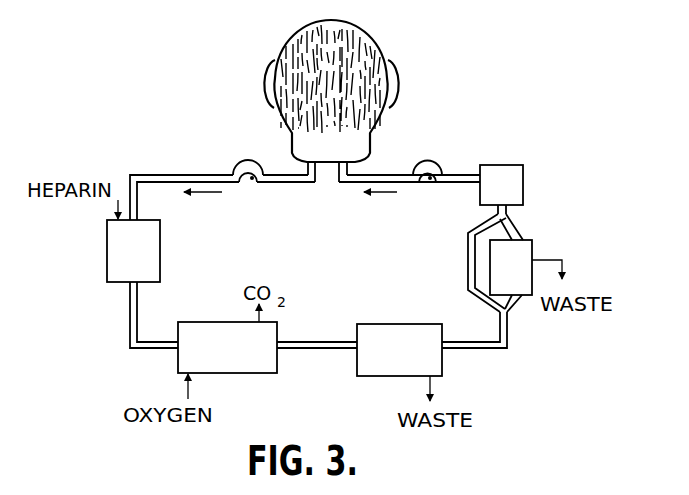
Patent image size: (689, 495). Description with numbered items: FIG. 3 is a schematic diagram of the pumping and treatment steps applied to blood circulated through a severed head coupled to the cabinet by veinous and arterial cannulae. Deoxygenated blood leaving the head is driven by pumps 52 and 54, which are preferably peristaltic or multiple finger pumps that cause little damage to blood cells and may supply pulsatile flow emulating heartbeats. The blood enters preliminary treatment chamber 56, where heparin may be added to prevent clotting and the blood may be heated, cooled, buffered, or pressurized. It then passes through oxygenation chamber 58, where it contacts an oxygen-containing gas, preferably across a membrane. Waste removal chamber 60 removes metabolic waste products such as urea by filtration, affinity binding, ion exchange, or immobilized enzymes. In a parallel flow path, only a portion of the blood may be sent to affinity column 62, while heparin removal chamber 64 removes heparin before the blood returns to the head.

The pump 52 is at (248, 191).
The pump 54 is at (437, 191).
The preliminary treatment chamber 56 is at (133, 251).
The oxygenation chamber 58 is at (227, 347).
The waste removal chamber 60 is at (399, 350).
The affinity column 62 is at (511, 267).
The heparin removal chamber 64 is at (501, 185).